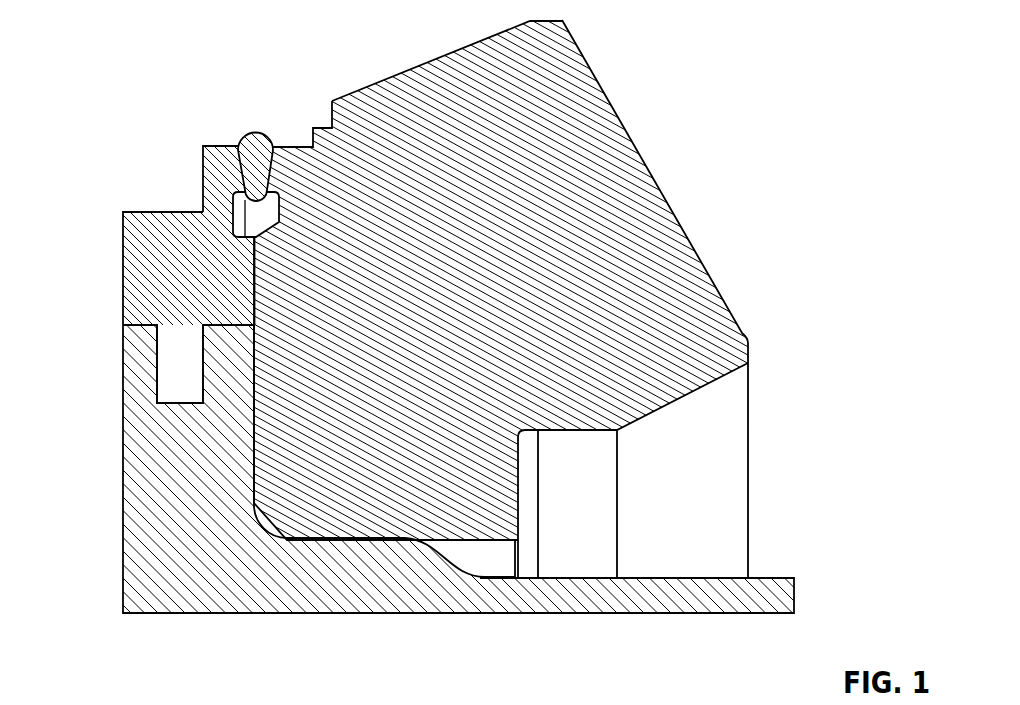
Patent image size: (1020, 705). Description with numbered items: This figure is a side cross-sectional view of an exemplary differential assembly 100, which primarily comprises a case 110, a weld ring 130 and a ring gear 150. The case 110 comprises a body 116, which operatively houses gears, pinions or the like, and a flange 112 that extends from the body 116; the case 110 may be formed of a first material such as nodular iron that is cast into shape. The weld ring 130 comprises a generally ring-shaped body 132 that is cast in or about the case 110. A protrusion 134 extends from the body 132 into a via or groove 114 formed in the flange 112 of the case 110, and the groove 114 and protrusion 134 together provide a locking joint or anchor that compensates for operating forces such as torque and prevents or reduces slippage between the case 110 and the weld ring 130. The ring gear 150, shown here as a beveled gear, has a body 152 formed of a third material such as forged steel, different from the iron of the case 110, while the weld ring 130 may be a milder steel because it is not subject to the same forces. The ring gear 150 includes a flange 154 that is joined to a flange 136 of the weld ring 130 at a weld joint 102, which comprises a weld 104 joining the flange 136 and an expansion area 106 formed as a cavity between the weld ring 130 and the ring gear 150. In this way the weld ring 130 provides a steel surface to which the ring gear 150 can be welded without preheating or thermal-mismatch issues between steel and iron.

The differential assembly 100 is at (510, 352).
The weld joint 102 is at (272, 136).
The weld 104 is at (253, 140).
The expansion area 106 is at (257, 213).
The case 110 is at (510, 496).
The flange 112 is at (143, 462).
The groove 114 is at (132, 365).
The body 116 is at (672, 598).
The weld ring 130 is at (216, 264).
The body 132 is at (145, 232).
The protrusion 134 is at (185, 360).
The flange 136 is at (218, 172).
The ring gear 150 is at (521, 352).
The body 152 is at (682, 290).
The flange 154 is at (278, 147).